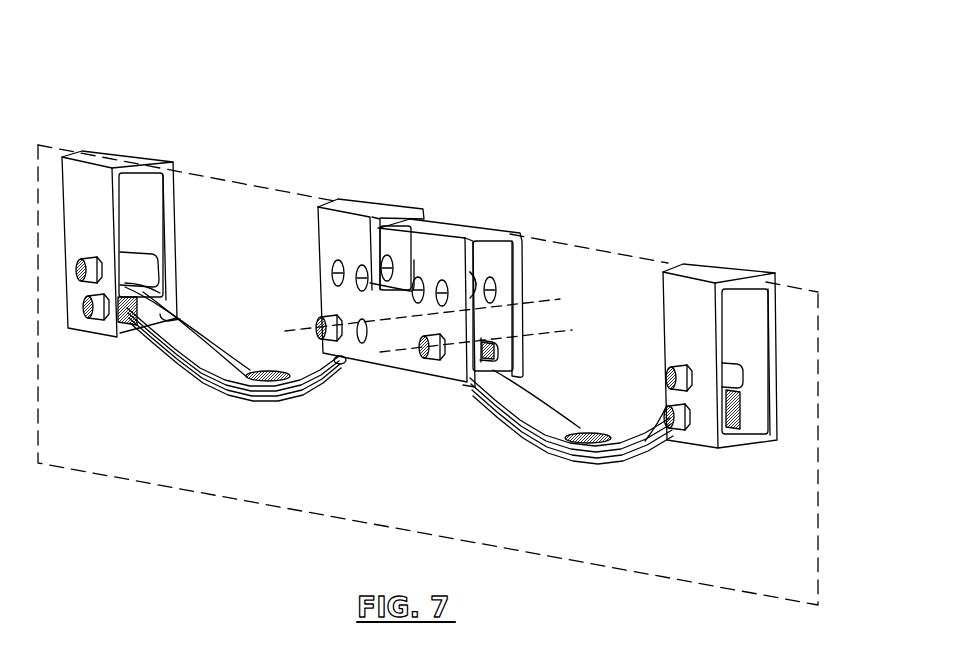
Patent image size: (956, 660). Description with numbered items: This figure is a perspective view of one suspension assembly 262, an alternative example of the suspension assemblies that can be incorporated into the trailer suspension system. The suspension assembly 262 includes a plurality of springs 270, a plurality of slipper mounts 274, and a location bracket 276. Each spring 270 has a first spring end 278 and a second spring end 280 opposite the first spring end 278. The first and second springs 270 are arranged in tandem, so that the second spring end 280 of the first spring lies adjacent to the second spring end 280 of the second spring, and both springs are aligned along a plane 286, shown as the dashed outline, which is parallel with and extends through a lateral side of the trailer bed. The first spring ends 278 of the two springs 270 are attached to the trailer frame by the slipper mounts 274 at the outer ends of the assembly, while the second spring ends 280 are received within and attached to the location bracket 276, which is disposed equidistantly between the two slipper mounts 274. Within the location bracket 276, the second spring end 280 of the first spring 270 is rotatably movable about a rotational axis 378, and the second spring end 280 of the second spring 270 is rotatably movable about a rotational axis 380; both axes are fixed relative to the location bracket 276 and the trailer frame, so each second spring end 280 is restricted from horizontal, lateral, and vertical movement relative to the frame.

The suspension assembly 262 is at (157, 55).
The spring 270 is at (192, 368).
The slipper mount 274 is at (140, 158).
The location bracket 276 is at (488, 222).
The first spring end 278 is at (173, 320).
The second spring end 280 is at (352, 363).
The plane 286 is at (822, 300).
The rotational axis 378 is at (530, 304).
The rotational axis 380 is at (566, 334).